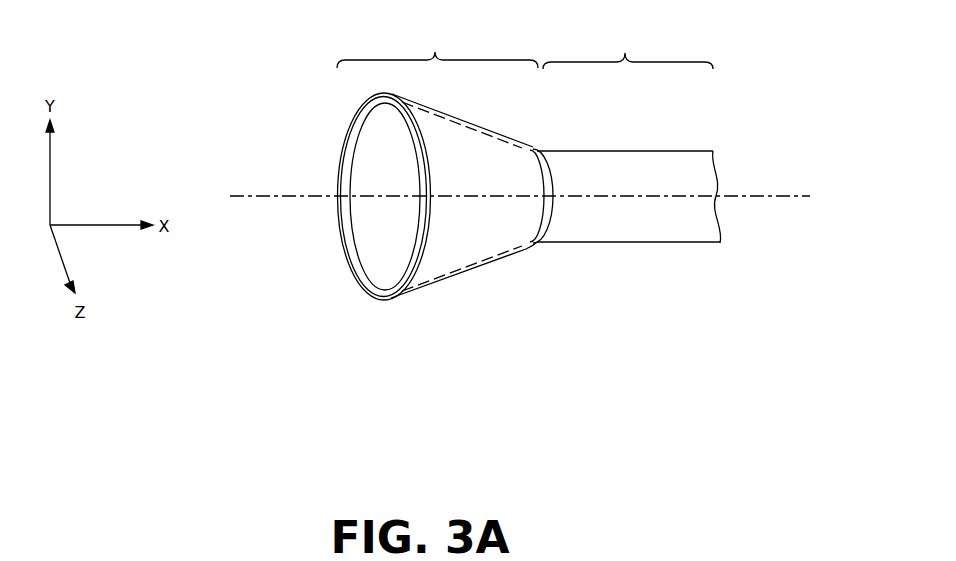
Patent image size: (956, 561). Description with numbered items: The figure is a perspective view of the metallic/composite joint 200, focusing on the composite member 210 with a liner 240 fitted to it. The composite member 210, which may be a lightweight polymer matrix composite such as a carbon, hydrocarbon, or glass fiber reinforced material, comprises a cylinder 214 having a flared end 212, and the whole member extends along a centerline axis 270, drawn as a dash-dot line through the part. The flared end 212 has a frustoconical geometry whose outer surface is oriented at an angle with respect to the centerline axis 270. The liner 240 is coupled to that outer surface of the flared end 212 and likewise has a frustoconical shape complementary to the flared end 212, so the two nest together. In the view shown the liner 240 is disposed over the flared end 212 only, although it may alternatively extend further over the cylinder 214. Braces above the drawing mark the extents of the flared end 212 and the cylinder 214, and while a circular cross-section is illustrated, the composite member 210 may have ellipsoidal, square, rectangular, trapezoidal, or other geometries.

The metallic/composite joint 200 is at (747, 98).
The composite member 210 is at (612, 223).
The flared end 212 is at (437, 45).
The cylinder 214 is at (628, 45).
The liner 240 is at (487, 140).
The centerline axis 270 is at (763, 198).